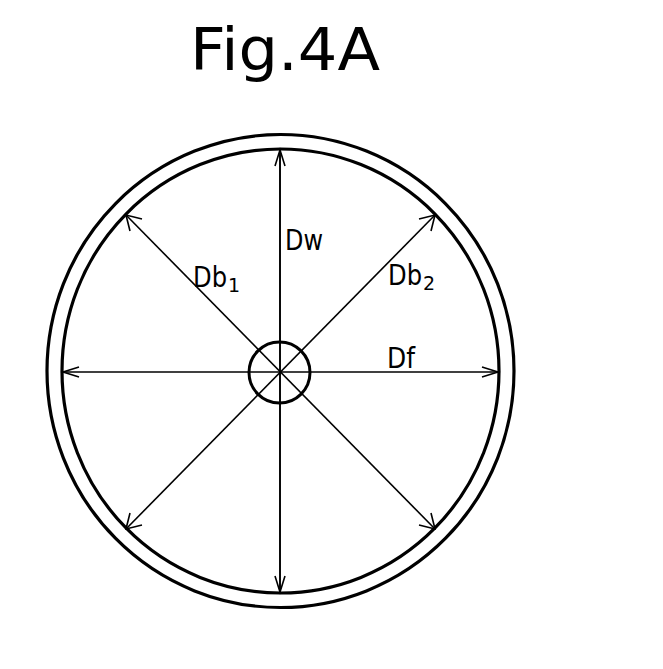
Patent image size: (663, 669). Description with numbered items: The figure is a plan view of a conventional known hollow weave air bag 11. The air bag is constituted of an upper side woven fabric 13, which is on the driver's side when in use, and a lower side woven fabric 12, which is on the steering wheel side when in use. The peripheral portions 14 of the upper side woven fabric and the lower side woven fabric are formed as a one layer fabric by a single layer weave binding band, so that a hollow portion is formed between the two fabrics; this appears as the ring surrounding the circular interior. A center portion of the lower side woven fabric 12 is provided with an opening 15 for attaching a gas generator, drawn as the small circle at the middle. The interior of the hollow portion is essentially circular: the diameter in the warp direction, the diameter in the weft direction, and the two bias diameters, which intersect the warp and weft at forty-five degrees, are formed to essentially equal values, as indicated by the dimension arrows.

The hollow weave air bag 11 is at (480, 193).
The lower side woven fabric 12 is at (321, 371).
The upper side woven fabric 13 is at (323, 371).
The peripheral portions 14 is at (508, 333).
The opening 15 is at (303, 370).